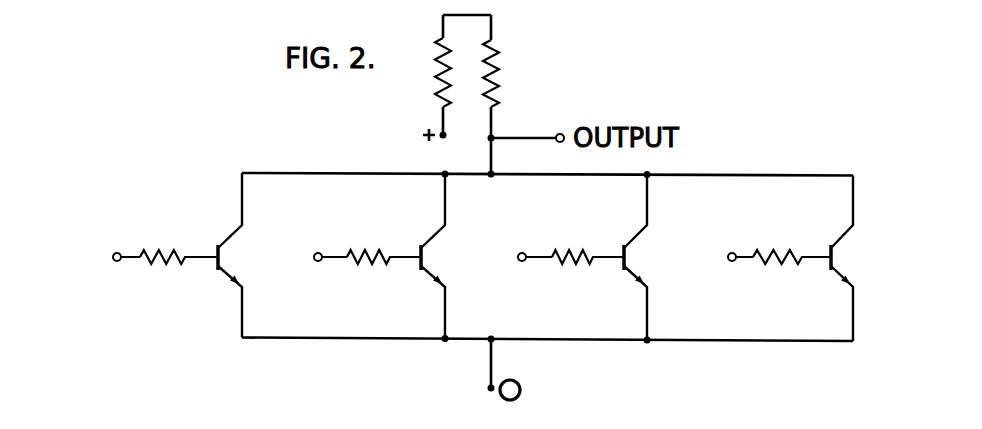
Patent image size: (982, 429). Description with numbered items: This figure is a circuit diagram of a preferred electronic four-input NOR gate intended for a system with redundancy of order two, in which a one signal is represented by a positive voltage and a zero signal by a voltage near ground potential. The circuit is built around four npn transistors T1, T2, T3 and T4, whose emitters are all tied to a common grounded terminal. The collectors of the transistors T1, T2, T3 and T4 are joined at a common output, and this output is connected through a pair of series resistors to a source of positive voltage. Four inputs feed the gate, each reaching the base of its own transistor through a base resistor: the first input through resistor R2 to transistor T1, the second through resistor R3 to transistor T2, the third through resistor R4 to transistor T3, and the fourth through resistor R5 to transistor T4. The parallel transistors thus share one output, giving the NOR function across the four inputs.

The resistor R2 is at (158, 251).
The resistor R3 is at (357, 251).
The resistor R4 is at (563, 241).
The resistor R5 is at (782, 241).
The npn transistor T1 is at (219, 260).
The npn transistor T2 is at (422, 260).
The npn transistor T3 is at (625, 260).
The npn transistor T4 is at (832, 260).